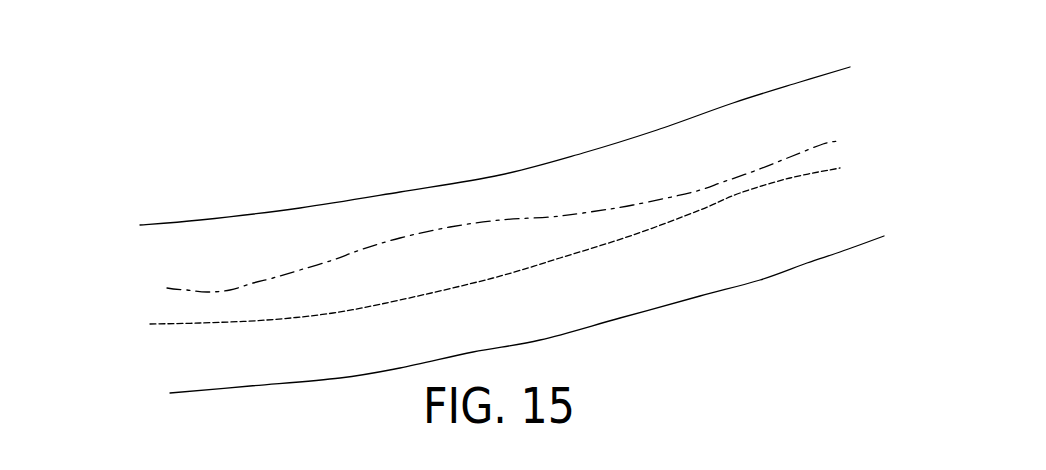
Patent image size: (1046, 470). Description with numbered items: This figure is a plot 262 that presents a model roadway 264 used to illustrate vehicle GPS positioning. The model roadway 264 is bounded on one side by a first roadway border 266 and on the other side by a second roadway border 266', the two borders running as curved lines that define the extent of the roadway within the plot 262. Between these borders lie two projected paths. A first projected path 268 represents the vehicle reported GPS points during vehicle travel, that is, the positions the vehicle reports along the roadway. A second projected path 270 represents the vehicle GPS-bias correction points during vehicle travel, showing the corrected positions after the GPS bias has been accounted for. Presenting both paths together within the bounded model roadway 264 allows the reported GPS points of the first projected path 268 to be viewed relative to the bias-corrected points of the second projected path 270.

The plot 262 is at (722, 70).
The model roadway 264 is at (678, 148).
The first roadway border 266 is at (528, 122).
The second roadway border 266' is at (565, 286).
The first projected path 268 is at (167, 288).
The second projected path 270 is at (150, 324).